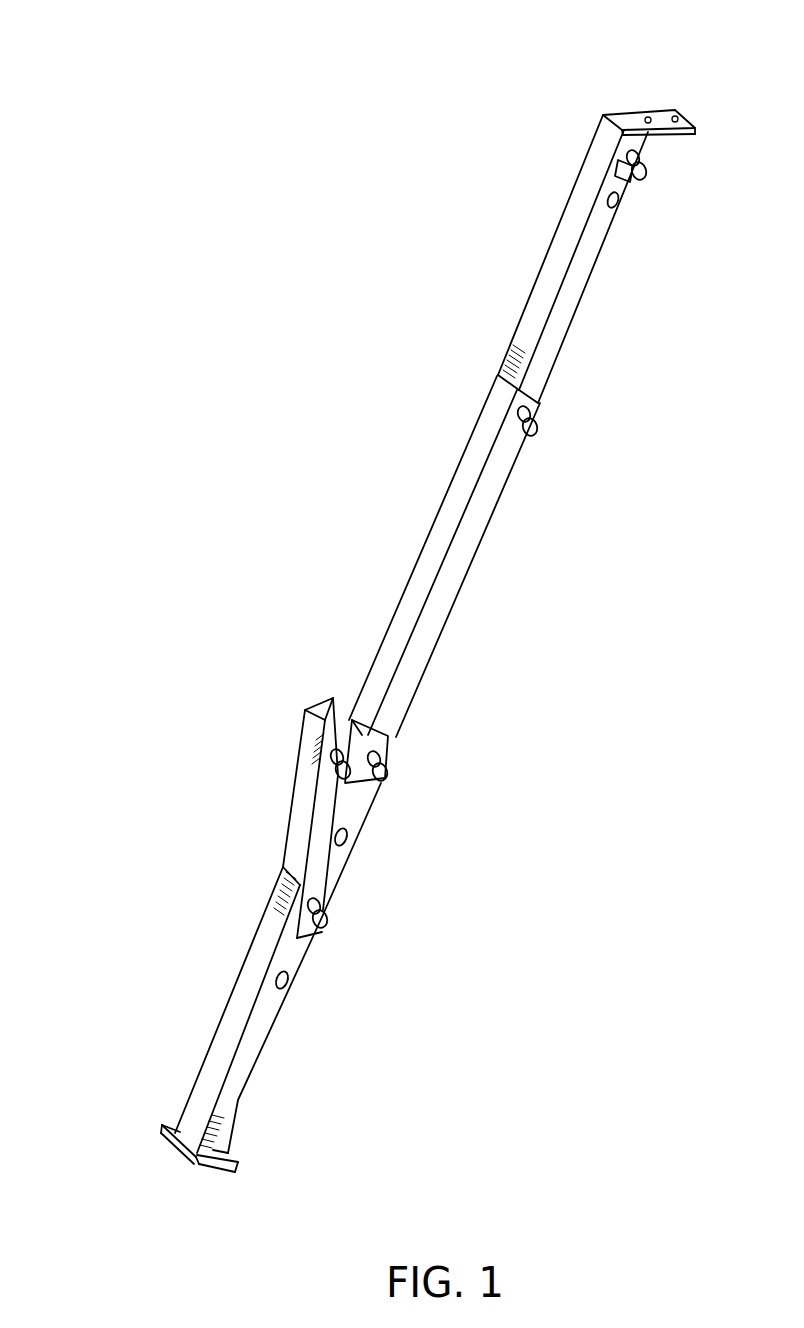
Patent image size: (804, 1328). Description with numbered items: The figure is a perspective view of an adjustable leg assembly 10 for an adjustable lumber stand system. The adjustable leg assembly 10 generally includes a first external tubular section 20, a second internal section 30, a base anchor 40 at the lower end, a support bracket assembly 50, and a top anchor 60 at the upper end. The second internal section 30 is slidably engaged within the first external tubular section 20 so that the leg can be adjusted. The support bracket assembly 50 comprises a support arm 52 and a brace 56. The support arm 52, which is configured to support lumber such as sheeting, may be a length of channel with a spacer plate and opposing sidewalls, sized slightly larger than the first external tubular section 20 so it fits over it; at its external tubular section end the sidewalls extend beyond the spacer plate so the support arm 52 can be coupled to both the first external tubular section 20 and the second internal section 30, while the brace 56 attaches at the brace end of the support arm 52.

The adjustable leg assembly 10 is at (243, 320).
The first external tubular section 20 is at (477, 515).
The second internal section 30 is at (575, 280).
The base anchor 40 is at (160, 1137).
The support bracket assembly 50 is at (337, 790).
The support arm 52 is at (383, 748).
The brace 56 is at (300, 805).
The top anchor 60 is at (628, 117).